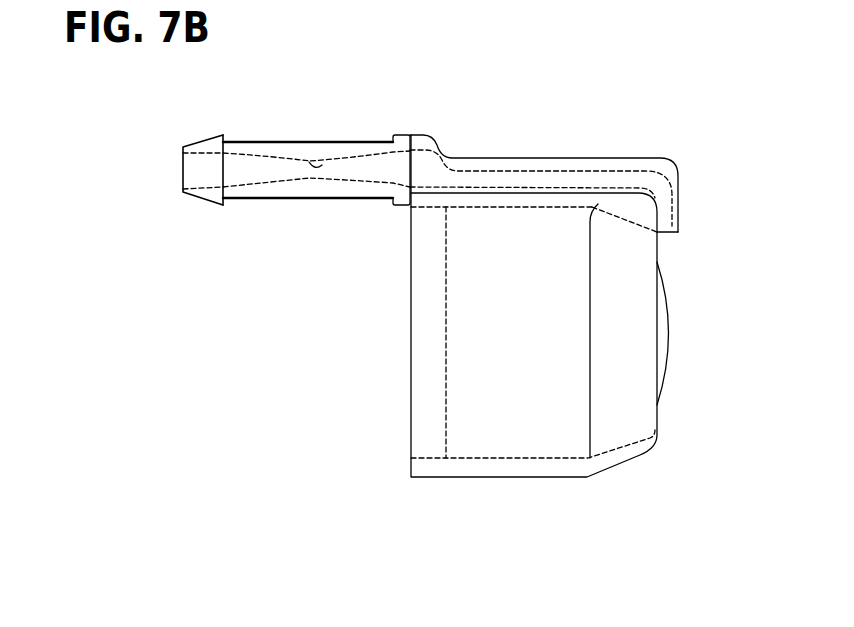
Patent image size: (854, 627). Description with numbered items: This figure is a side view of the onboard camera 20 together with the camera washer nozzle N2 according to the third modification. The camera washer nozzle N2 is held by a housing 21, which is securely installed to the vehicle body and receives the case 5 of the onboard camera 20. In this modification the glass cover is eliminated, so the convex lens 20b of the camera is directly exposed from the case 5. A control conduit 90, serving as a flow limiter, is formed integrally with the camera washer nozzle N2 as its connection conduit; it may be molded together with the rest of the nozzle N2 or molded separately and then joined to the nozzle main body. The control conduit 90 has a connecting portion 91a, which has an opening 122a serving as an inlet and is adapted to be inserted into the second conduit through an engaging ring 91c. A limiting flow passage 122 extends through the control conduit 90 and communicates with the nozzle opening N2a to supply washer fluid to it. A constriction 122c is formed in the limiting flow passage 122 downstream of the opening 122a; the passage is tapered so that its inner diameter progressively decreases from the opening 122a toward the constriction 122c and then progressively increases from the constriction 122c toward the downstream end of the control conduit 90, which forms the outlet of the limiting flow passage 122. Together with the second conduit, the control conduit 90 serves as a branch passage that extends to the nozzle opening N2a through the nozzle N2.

The case 5 is at (541, 458).
The onboard camera 20 is at (444, 420).
The lens 20b is at (668, 325).
The housing 21 is at (423, 372).
The control conduit 90 is at (364, 141).
The connecting portion 91a is at (241, 142).
The engaging ring 91c is at (197, 197).
The limiting flow passage 122 is at (271, 172).
The opening 122a is at (182, 159).
The constriction 122c is at (308, 160).
The camera washer nozzle N2 is at (557, 158).
The nozzle opening N2a is at (659, 233).